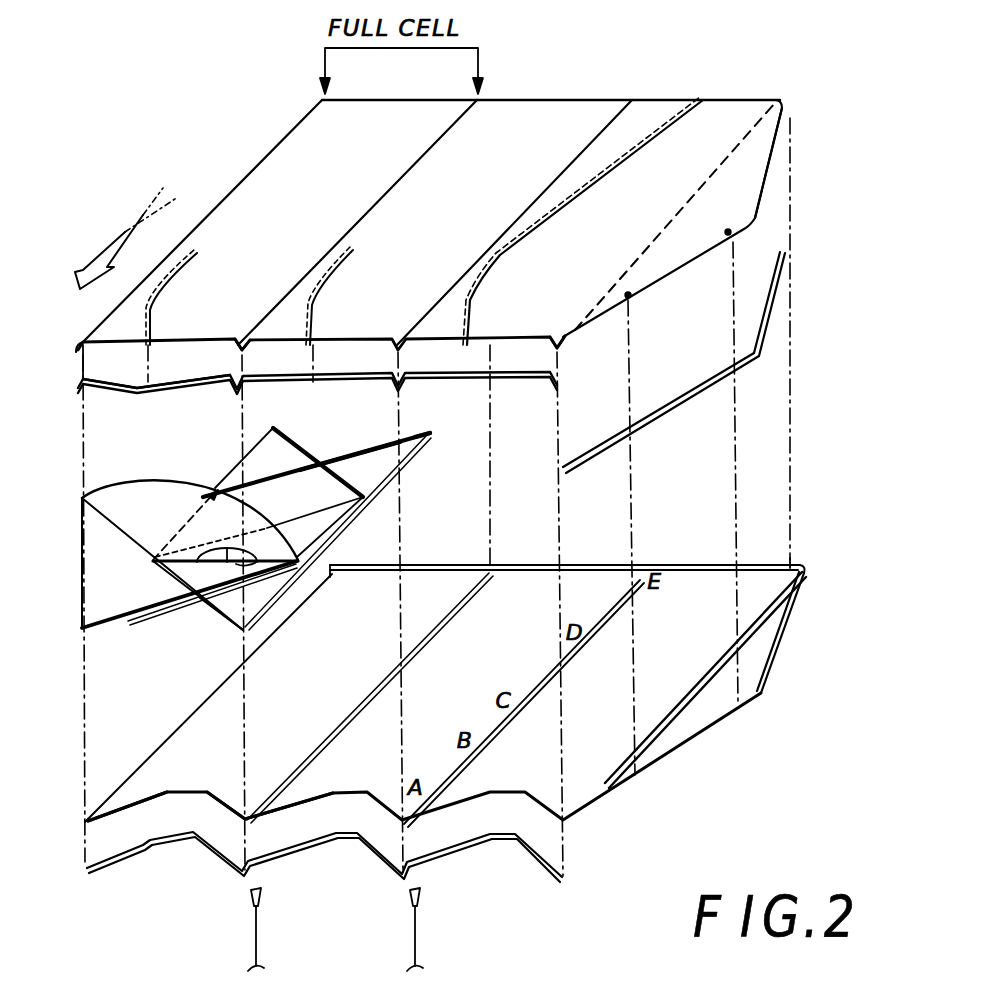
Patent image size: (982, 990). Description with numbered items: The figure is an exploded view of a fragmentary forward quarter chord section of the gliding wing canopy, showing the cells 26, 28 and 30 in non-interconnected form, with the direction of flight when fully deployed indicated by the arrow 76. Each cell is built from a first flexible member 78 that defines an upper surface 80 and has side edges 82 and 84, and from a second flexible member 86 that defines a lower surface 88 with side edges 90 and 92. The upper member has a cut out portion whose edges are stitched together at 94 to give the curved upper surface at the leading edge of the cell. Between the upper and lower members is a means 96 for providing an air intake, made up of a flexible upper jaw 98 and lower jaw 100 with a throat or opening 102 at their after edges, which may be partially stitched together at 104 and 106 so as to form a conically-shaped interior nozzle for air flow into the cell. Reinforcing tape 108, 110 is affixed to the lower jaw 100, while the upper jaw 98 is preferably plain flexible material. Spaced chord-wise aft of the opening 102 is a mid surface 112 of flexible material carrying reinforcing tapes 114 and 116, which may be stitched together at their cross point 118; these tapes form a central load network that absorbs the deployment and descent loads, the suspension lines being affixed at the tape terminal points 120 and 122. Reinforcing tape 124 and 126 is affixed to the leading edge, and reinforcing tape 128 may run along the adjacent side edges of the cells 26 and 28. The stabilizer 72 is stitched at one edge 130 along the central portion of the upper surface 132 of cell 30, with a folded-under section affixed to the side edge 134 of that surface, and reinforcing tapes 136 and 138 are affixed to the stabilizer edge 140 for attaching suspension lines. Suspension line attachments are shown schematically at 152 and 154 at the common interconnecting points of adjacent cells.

The cell 26 is at (312, 147).
The cell 28 is at (523, 117).
The cell 30 is at (677, 100).
The stabilizer 72 is at (752, 178).
The arrow 76 is at (125, 232).
The first flexible member 78 is at (80, 383).
The upper surface 80 is at (340, 200).
The side edge 82 is at (80, 350).
The side edge 84 is at (242, 344).
The second flexible member 86 is at (135, 775).
The lower surface 88 is at (333, 695).
The side edge 90 is at (88, 822).
The side edge 92 is at (250, 824).
The stitched cut out portion 94 is at (160, 297).
The air intake means 96 is at (80, 578).
The upper jaw 98 is at (127, 487).
The lower jaw 100 is at (98, 632).
The throat or opening 102 is at (265, 578).
The stitching 104 is at (178, 553).
The stitching 106 is at (284, 530).
The reinforcing tape 108 is at (160, 627).
The reinforcing tape 110 is at (243, 630).
The mid surface 112 is at (407, 448).
The reinforcing tape 114 is at (292, 440).
The reinforcing tape 116 is at (377, 443).
The cross point 118 is at (335, 437).
The tape terminal point 120 is at (363, 498).
The tape terminal point 122 is at (432, 433).
The reinforcing tape 124 is at (153, 388).
The reinforcing tape 126 is at (143, 853).
The reinforcing tape 128 is at (325, 735).
The edge 130 is at (700, 100).
The upper surface 132 is at (632, 125).
The side edge 134 is at (565, 347).
The reinforcing tape 136 is at (672, 403).
The reinforcing tape 138 is at (705, 735).
The edge 140 is at (762, 201).
The suspension line attachment 152 is at (425, 901).
The suspension line attachment 154 is at (265, 901).